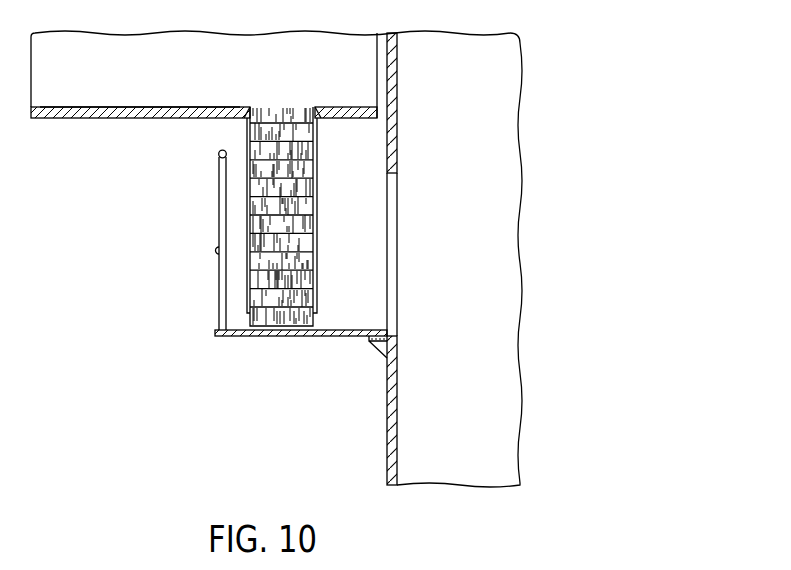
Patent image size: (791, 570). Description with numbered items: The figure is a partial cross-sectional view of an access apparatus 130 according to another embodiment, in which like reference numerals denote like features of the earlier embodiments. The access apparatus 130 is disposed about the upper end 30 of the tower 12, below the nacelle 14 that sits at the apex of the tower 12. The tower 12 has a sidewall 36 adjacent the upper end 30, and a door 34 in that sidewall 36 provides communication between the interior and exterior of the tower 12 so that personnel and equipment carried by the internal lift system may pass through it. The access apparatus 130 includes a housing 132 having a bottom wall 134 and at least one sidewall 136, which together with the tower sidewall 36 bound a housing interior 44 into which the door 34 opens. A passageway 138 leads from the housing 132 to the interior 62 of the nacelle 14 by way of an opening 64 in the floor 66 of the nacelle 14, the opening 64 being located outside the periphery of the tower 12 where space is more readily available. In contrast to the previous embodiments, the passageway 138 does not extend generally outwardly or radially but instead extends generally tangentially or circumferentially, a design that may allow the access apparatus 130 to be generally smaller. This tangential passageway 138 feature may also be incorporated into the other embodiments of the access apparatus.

The tower 12 is at (387, 462).
The nacelle 14 is at (73, 120).
The upper end of the tower 30 is at (398, 42).
The door 34 is at (397, 192).
The sidewall of the tower 36 is at (397, 82).
The housing interior 44 is at (315, 215).
The interior of the nacelle 62 is at (270, 74).
The opening 64 is at (303, 108).
The floor of the nacelle 66 is at (99, 107).
The access apparatus 130 is at (138, 378).
The housing 132 is at (143, 225).
The bottom wall 134 is at (287, 339).
The sidewall 136 is at (217, 205).
The passageway 138 is at (324, 186).